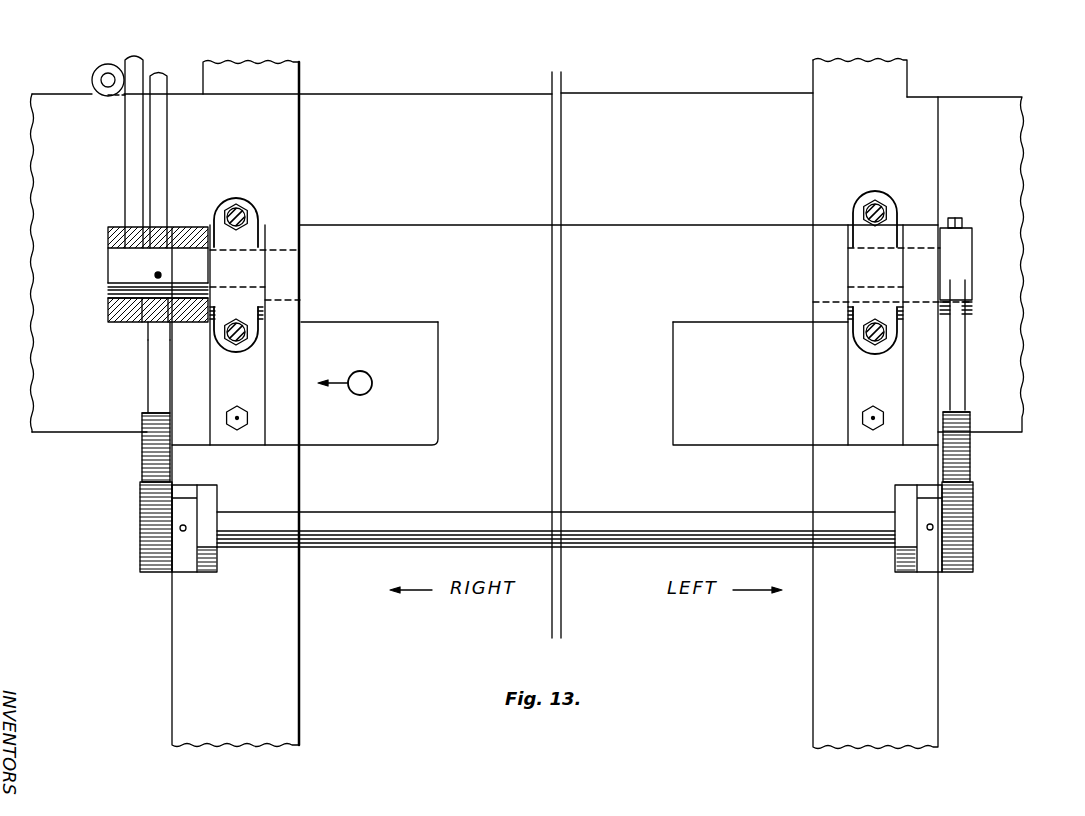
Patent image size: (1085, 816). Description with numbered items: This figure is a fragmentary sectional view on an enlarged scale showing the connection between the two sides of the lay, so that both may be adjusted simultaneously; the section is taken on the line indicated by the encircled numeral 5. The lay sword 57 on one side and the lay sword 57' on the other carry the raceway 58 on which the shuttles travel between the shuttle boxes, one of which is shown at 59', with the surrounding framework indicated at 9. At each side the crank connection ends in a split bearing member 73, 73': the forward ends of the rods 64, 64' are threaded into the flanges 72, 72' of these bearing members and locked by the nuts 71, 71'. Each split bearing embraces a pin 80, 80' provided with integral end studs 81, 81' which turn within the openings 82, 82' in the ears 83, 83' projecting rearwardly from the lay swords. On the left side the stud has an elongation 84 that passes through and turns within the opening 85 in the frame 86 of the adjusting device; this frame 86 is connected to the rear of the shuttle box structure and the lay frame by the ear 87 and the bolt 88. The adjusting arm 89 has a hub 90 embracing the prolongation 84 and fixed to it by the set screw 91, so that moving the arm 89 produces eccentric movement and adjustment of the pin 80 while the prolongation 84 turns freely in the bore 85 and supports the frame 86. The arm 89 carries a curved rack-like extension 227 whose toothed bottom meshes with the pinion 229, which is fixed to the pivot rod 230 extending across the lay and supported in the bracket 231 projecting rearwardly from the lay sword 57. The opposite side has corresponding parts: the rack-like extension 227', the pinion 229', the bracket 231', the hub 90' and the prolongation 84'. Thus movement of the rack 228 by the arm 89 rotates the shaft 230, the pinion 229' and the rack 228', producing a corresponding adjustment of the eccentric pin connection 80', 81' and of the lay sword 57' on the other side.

The frame 9 is at (45, 410).
The shuttle box 59' is at (982, 264).
The lay sword 57 is at (260, 404).
The lay sword 57' is at (903, 404).
The raceway 58 is at (620, 305).
The pin 80 is at (601, 273).
The pin 80' is at (797, 339).
The bolt 88 is at (92, 80).
The ear 87 is at (117, 92).
The frame 86 is at (133, 146).
The adjusting arm 89 is at (158, 140).
The opening 85 is at (107, 233).
The hub 90 is at (135, 265).
The hub 90' is at (975, 270).
The elongation 84 is at (135, 292).
The elongation 84' is at (1005, 245).
The set screw 91 is at (112, 318).
The end stud 81 is at (225, 322).
The end stud 81' is at (887, 284).
The ear 83 is at (225, 343).
The ear 83' is at (881, 364).
The split bearing member 73 is at (275, 321).
The split bearing member 73' is at (831, 335).
The nut 71 is at (277, 261).
The nut 71' is at (842, 291).
The rod 64 is at (240, 271).
The rod 64' is at (859, 274).
The flange 72 is at (249, 348).
The flange 72' is at (914, 227).
The opening 82 is at (286, 238).
The opening 82' is at (839, 278).
The curved rack-like extension 227 is at (124, 406).
The curved rack-like extension 227' is at (977, 346).
The rack 228 is at (122, 456).
The rack 228' is at (987, 447).
The pinion 229 is at (118, 527).
The pinion 229' is at (989, 527).
The pivot rod 230 is at (480, 520).
The bracket 231 is at (202, 546).
The bracket 231' is at (902, 546).
The view indicator 5 is at (345, 383).